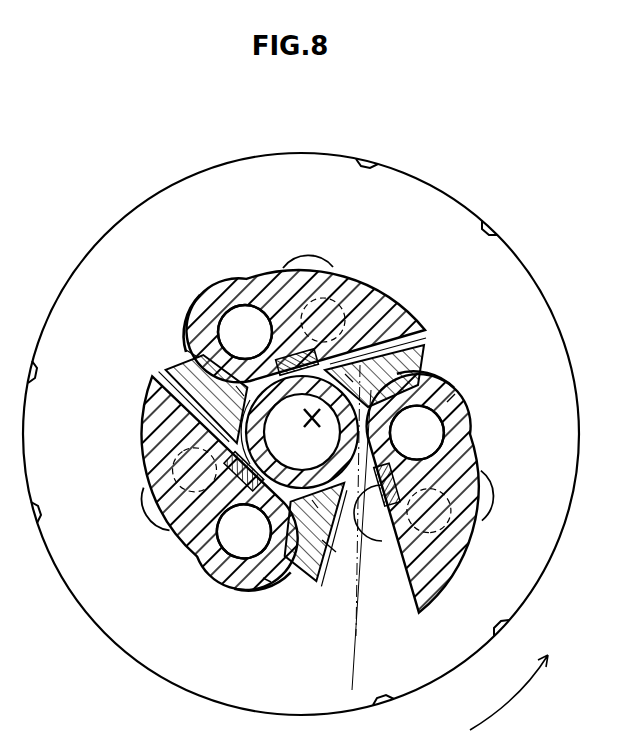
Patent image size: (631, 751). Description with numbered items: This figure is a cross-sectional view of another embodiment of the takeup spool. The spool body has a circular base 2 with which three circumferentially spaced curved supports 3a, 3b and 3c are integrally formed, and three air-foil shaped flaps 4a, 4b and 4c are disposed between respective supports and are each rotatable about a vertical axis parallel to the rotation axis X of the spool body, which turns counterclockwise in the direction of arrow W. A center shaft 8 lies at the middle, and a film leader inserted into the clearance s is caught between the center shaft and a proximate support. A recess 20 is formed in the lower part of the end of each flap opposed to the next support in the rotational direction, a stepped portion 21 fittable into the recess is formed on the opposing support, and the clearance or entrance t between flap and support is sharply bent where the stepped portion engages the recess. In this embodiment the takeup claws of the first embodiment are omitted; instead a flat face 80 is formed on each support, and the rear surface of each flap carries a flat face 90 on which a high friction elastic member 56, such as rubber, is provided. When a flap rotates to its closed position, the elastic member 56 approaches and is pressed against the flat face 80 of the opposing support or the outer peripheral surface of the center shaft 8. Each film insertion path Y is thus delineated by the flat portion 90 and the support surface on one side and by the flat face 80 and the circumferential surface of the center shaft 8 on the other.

The circular base 2 is at (453, 238).
The support 3a is at (298, 560).
The support 3b is at (175, 384).
The support 3c is at (386, 384).
The flap 4a is at (443, 582).
The flap 4b is at (183, 442).
The flap 4c is at (296, 304).
The center shaft 8 is at (281, 434).
The recess 20 is at (236, 297).
The stepped portion 21 is at (197, 306).
The high friction elastic member 56 is at (307, 352).
The flat face 80 is at (336, 553).
The flat face 90 is at (401, 593).
The clearance s is at (294, 447).
The clearance t is at (182, 334).
The rotation axis X is at (312, 414).
The film insertion path Y is at (361, 527).
The arrow indicating direction of rotation W is at (518, 690).